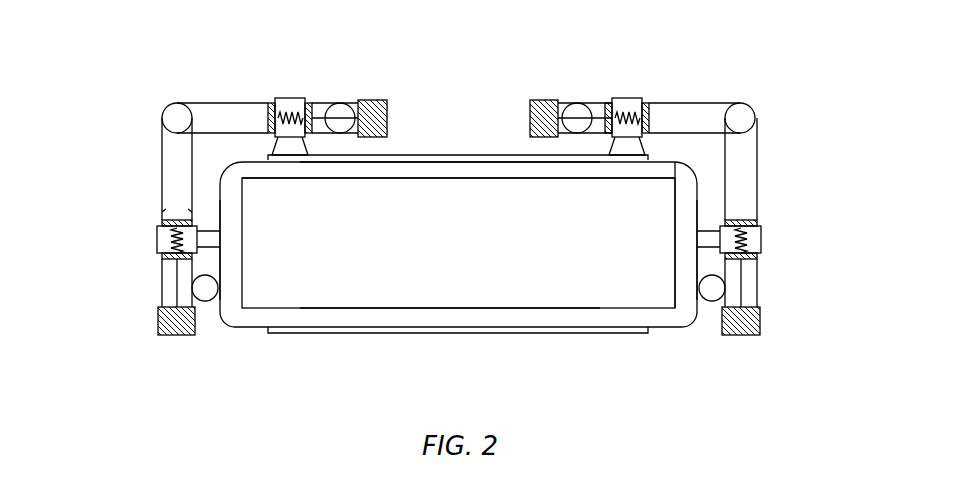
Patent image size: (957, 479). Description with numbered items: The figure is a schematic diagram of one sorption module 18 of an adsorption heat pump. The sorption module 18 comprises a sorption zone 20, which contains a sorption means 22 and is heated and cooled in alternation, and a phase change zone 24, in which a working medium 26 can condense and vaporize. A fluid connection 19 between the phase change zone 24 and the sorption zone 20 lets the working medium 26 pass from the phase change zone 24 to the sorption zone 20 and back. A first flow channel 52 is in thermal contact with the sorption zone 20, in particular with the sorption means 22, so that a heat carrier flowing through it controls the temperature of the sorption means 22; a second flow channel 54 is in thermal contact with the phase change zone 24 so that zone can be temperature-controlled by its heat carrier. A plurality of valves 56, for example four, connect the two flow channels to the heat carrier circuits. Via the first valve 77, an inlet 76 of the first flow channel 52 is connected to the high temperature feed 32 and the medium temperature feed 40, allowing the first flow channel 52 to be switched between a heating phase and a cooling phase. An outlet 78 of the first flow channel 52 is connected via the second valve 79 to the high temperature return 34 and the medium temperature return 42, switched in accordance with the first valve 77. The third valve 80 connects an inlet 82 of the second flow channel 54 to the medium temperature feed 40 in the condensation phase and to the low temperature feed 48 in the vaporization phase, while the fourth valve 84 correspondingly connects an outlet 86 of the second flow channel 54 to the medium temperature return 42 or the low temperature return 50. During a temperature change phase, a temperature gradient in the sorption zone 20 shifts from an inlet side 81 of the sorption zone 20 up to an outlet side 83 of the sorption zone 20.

The sorption module 18 is at (397, 335).
The fluid connection 19 is at (673, 183).
The sorption zone 20 is at (444, 257).
The sorption means 22 is at (566, 287).
The phase change zone 24 is at (520, 168).
The working medium 26 is at (446, 158).
The high temperature feed 32 is at (211, 292).
The high temperature return 34 is at (712, 294).
The medium temperature feed 40 is at (177, 117).
The medium temperature return 42 is at (740, 115).
The low temperature feed 48 is at (340, 108).
The low temperature return 50 is at (578, 108).
The first flow channel 52 is at (287, 197).
The second flow channel 54 is at (417, 157).
The valves 56 is at (448, 151).
The inlet 76 is at (195, 257).
The first valve 77 is at (165, 240).
The outlet 78 is at (728, 262).
The second valve 79 is at (752, 238).
The third valve 80 is at (292, 110).
The inlet side 81 is at (228, 285).
The inlet 82 is at (272, 148).
The outlet side 83 is at (683, 262).
The fourth valve 84 is at (624, 100).
The outlet 86 is at (643, 148).